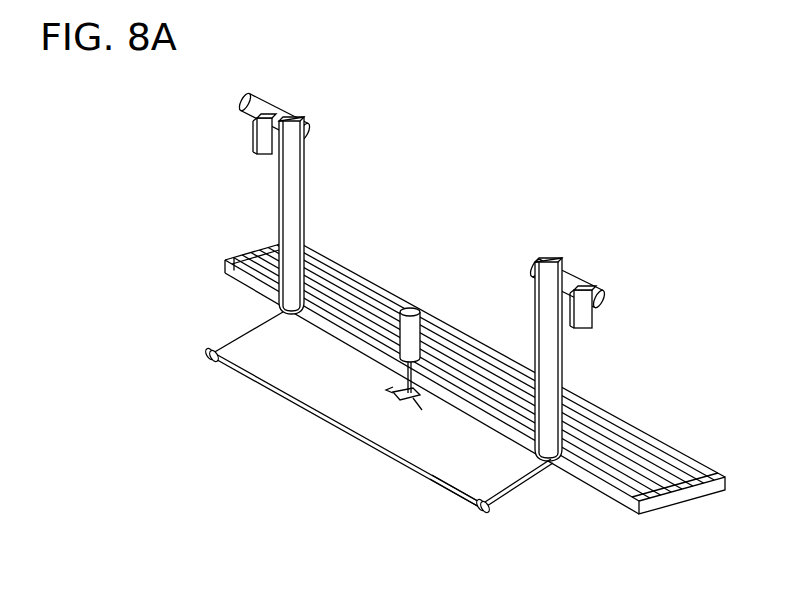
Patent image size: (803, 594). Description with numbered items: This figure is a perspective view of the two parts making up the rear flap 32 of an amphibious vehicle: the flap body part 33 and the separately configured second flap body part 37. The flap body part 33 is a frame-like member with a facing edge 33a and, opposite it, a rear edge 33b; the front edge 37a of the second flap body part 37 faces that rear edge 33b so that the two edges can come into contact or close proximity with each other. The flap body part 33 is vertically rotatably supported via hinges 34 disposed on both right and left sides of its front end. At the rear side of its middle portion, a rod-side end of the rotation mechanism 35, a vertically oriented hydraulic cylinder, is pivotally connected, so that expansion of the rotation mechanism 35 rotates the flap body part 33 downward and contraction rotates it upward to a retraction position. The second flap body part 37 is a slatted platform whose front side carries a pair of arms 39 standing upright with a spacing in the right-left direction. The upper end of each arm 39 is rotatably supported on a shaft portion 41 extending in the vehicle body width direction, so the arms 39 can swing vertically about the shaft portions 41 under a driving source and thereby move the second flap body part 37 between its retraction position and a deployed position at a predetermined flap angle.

The rear flap 32 is at (667, 370).
The flap body part 33 is at (433, 465).
The facing edge 33a is at (460, 500).
The rear edge 33b is at (493, 416).
The hinge 34 is at (208, 356).
The rotation mechanism 35 is at (397, 338).
The second flap body part 37 is at (708, 460).
The front edge 37a is at (453, 408).
The arm 39 is at (295, 186).
The shaft portion 41 is at (259, 97).